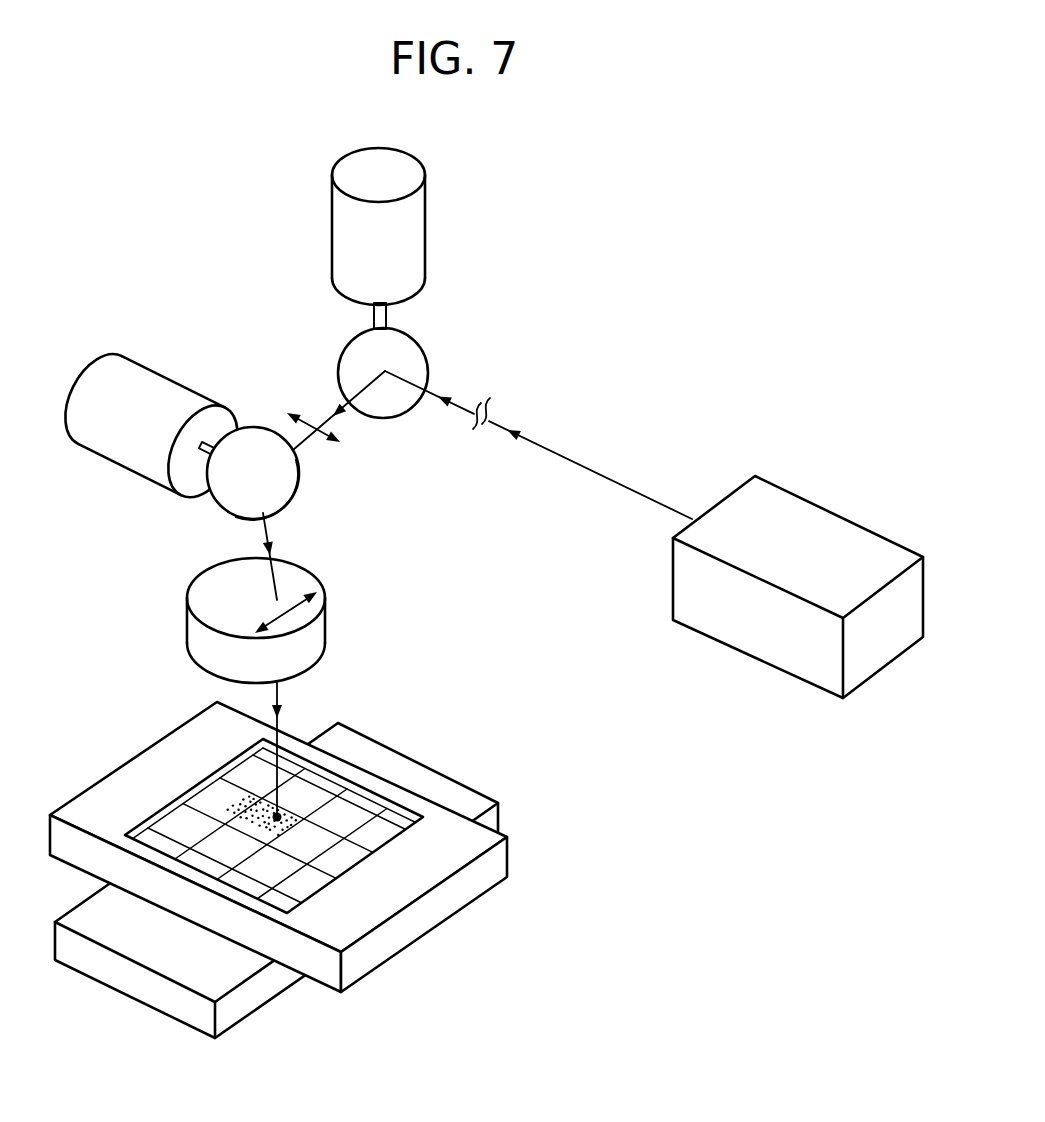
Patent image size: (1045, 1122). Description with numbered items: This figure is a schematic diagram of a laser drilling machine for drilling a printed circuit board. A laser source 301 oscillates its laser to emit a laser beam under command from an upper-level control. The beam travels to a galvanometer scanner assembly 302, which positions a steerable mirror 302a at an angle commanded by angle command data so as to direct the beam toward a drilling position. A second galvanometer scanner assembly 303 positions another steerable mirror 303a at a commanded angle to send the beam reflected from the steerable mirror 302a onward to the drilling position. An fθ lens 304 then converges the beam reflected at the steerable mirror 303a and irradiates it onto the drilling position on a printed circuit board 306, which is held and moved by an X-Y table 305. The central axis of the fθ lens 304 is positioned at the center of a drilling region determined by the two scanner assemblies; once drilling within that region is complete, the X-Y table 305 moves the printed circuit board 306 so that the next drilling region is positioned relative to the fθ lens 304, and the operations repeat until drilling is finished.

The laser source 301 is at (818, 513).
The galvanometer scanner assembly 302 is at (425, 213).
The steerable mirror 302a is at (427, 357).
The galvanometer scanner assembly 303 is at (143, 370).
The steerable mirror 303a is at (227, 513).
The fθ lens 304 is at (300, 572).
The X-Y table 305 is at (433, 782).
The printed circuit board 306 is at (357, 870).